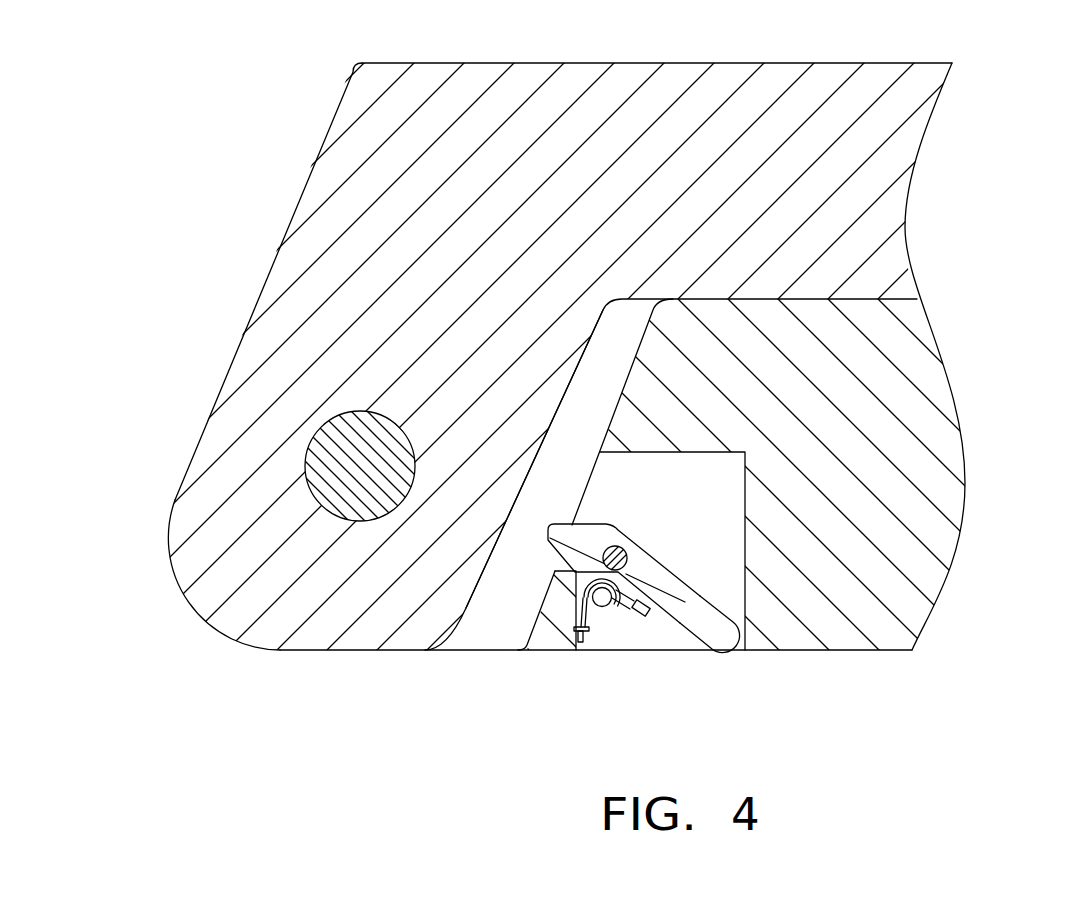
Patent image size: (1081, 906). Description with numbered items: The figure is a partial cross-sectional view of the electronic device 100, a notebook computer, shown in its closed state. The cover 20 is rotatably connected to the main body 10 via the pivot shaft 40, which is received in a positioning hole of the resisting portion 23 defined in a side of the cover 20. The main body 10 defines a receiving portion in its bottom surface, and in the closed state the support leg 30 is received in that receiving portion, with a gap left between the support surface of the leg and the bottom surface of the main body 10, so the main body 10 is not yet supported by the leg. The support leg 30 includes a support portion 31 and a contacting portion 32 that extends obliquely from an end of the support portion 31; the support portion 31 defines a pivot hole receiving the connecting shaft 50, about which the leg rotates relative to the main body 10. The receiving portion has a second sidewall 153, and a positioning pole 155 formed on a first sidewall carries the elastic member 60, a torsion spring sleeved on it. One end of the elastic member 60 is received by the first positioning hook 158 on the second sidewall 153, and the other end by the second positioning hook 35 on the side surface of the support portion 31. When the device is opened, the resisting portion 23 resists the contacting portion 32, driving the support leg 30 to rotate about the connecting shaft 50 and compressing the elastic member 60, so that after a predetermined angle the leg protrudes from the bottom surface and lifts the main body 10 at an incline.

The electronic device 100 is at (693, 41).
The main body 10 is at (862, 410).
The cover 20 is at (867, 183).
The resisting portion 23 is at (332, 573).
The support leg 30 is at (685, 602).
The support portion 31 is at (712, 630).
The contacting portion 32 is at (548, 538).
The second positioning hook 35 is at (641, 614).
The pivot shaft 40 is at (350, 453).
The connecting shaft 50 is at (627, 557).
The elastic member 60 is at (619, 600).
The second sidewall 153 is at (563, 607).
The positioning pole 155 is at (612, 607).
The first positioning hook 158 is at (581, 642).